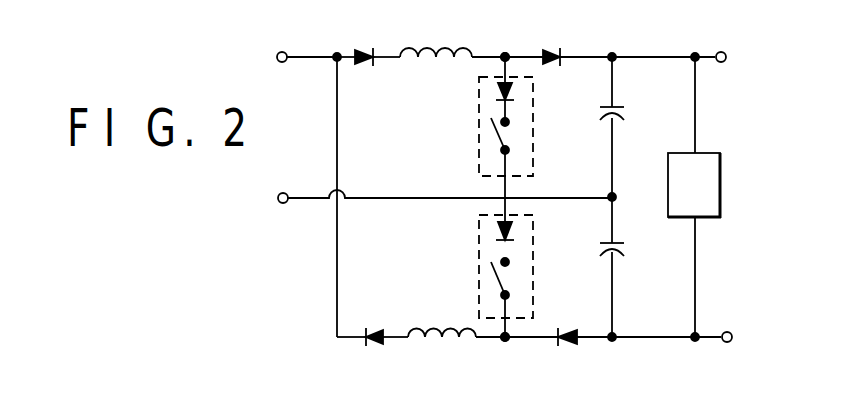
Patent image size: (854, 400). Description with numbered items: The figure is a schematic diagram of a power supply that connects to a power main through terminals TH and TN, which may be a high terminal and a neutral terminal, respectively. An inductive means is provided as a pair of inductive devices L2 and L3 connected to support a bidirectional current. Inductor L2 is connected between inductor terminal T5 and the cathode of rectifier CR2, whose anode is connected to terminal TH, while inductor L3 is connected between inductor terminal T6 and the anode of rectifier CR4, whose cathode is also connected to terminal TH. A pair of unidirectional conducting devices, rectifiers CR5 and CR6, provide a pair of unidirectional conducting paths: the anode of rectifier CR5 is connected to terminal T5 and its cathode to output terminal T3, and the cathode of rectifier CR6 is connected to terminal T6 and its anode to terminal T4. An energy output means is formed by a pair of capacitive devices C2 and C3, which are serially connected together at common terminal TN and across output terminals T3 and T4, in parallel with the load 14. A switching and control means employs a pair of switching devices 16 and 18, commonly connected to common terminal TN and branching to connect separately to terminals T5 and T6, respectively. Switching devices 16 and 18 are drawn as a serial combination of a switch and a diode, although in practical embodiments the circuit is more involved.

The high terminal TH is at (280, 58).
The neutral terminal TN is at (422, 199).
The output terminal T3 is at (745, 58).
The output terminal T4 is at (751, 339).
The inductor terminal T5 is at (506, 53).
The inductor terminal T6 is at (503, 341).
The rectifier CR2 is at (405, 85).
The rectifier CR4 is at (377, 370).
The rectifier CR5 is at (582, 38).
The rectifier CR6 is at (580, 343).
The inductor L2 is at (469, 48).
The inductor L3 is at (433, 340).
The capacitive device C2 is at (625, 113).
The capacitive device C3 is at (631, 243).
The load 14 is at (721, 185).
The switching device 16 is at (478, 122).
The switching device 18 is at (478, 250).